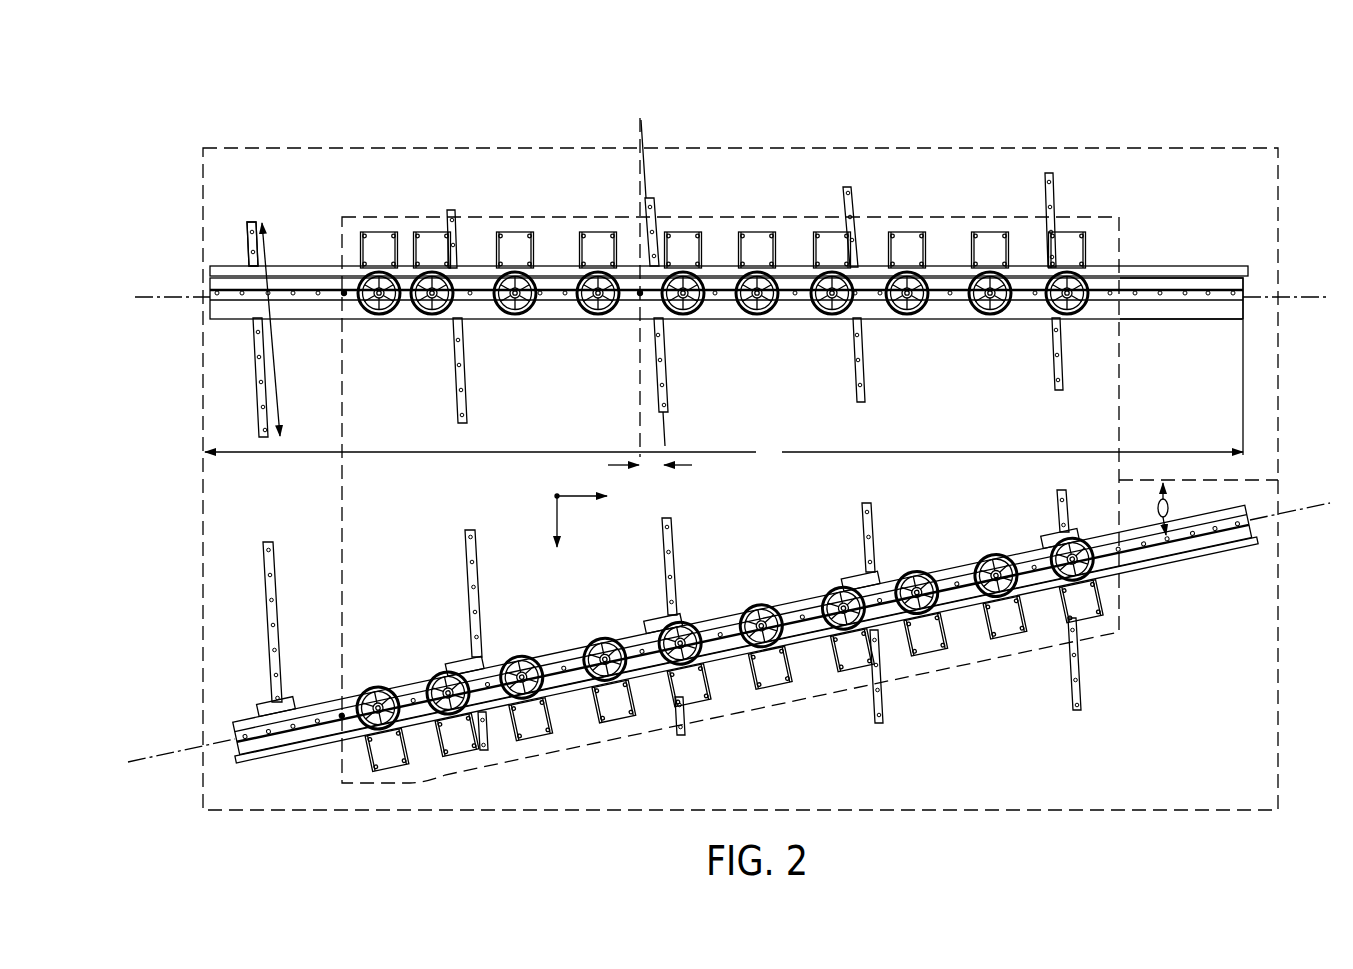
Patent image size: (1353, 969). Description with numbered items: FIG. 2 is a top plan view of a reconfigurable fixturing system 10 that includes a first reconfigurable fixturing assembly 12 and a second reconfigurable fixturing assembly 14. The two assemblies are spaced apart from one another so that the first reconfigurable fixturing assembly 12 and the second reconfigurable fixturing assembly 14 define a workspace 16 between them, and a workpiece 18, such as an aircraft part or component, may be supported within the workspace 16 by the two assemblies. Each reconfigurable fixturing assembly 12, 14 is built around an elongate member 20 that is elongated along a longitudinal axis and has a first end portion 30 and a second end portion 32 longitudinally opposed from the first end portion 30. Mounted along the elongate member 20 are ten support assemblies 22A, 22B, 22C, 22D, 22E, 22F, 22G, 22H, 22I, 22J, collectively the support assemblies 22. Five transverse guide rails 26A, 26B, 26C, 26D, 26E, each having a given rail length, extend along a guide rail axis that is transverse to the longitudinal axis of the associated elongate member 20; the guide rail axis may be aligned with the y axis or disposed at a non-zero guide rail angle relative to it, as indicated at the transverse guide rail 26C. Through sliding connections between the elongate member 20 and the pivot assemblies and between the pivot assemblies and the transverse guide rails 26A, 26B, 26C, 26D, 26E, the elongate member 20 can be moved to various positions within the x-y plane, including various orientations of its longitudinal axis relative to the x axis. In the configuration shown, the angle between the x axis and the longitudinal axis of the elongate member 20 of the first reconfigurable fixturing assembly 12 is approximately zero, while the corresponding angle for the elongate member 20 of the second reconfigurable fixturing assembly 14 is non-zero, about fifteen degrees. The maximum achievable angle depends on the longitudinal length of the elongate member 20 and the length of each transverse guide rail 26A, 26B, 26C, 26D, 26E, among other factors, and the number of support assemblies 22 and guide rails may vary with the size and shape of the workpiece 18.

The reconfigurable fixturing system 10 is at (1072, 91).
The first reconfigurable fixturing assembly 12 is at (1168, 241).
The second reconfigurable fixturing assembly 14 is at (1163, 637).
The workspace 16 is at (1177, 148).
The workpiece 18 is at (1119, 432).
The elongate member 20 is at (572, 320).
The support assemblies 22 is at (348, 246).
The support assembly 22A is at (382, 232).
The support assembly 22B is at (440, 232).
The support assembly 22C is at (517, 232).
The support assembly 22D is at (597, 233).
The support assembly 22E is at (692, 232).
The support assembly 22F is at (758, 232).
The support assembly 22G is at (826, 232).
The support assembly 22H is at (906, 232).
The support assembly 22I is at (996, 232).
The support assembly 22J is at (1070, 232).
The transverse guide rail 26A is at (257, 422).
The transverse guide rail 26B is at (465, 386).
The transverse guide rail 26C is at (664, 388).
The transverse guide rail 26D is at (862, 386).
The transverse guide rail 26E is at (1052, 377).
The first end portion 30 is at (229, 249).
The second end portion 32 is at (1193, 325).